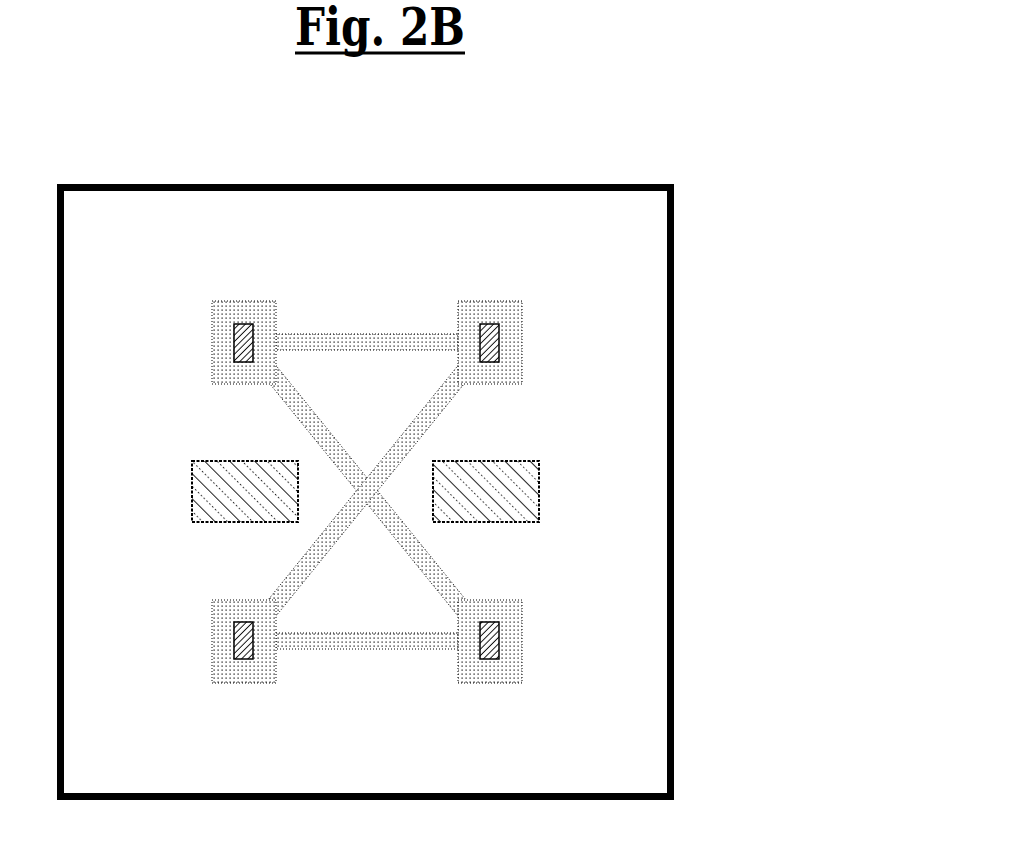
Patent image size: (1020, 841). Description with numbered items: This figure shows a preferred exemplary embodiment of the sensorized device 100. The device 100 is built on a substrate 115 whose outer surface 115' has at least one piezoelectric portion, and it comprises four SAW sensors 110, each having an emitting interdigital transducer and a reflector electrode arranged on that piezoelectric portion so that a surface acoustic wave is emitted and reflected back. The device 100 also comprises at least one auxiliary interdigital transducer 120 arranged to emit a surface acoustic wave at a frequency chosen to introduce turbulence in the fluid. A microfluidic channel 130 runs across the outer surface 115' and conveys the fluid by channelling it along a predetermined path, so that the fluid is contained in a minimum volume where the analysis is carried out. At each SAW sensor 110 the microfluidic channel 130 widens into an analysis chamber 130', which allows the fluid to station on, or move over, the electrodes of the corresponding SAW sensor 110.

The sensorized device 100 is at (610, 127).
The SAW sensor 110 is at (467, 322).
The substrate 115 is at (437, 492).
The outer surface 115' is at (697, 620).
The auxiliary interdigital transducer 120 is at (182, 454).
The microfluidic channel 130 is at (367, 491).
The analysis chamber 130' is at (384, 458).